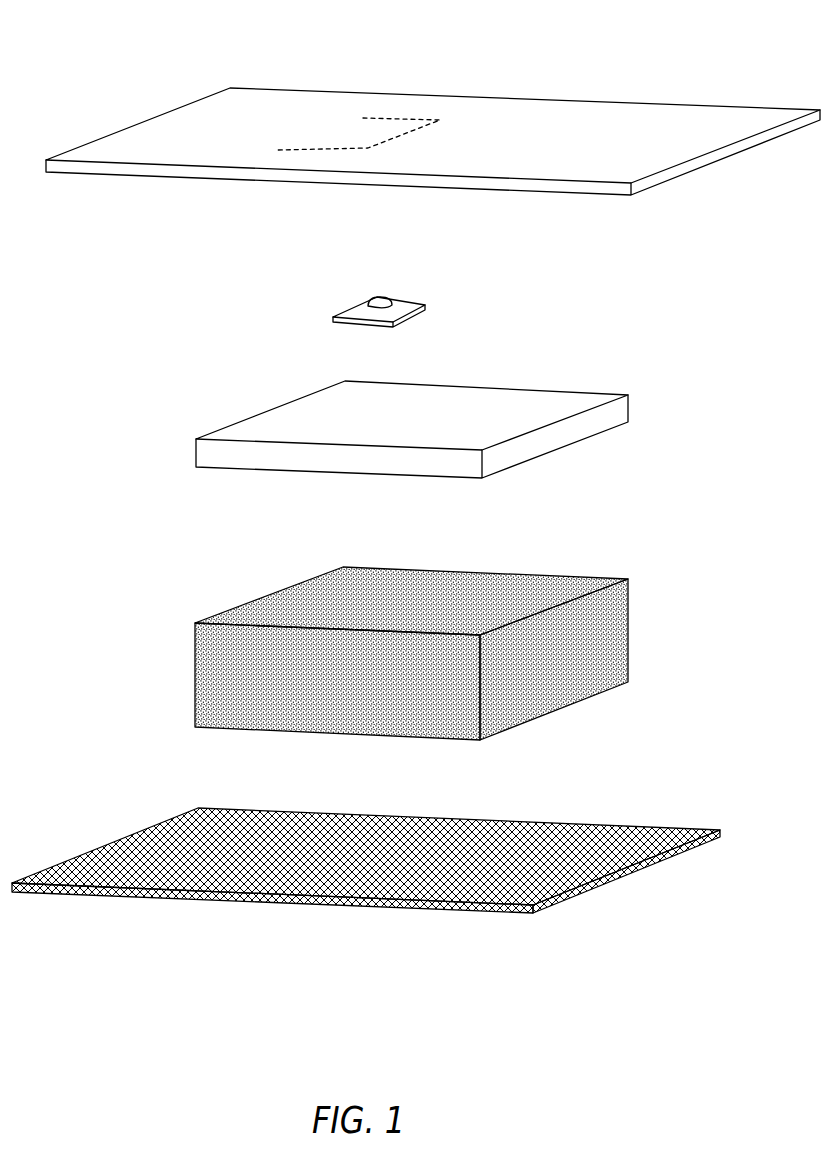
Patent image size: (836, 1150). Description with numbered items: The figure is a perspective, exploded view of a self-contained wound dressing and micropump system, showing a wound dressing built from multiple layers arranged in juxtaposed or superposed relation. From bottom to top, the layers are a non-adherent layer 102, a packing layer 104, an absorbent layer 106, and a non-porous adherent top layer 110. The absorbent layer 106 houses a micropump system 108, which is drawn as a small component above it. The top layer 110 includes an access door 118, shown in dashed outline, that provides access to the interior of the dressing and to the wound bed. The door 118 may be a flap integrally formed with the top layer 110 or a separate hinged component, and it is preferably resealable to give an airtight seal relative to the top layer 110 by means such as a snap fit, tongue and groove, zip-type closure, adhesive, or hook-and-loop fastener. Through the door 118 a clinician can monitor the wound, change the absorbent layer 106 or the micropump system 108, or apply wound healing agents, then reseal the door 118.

The non-adherent layer 102 is at (663, 798).
The packing layer 104 is at (608, 552).
The absorbent layer 106 is at (633, 352).
The micropump system 108 is at (325, 287).
The non-porous adherent top layer 110 is at (665, 57).
The access door 118 is at (385, 133).